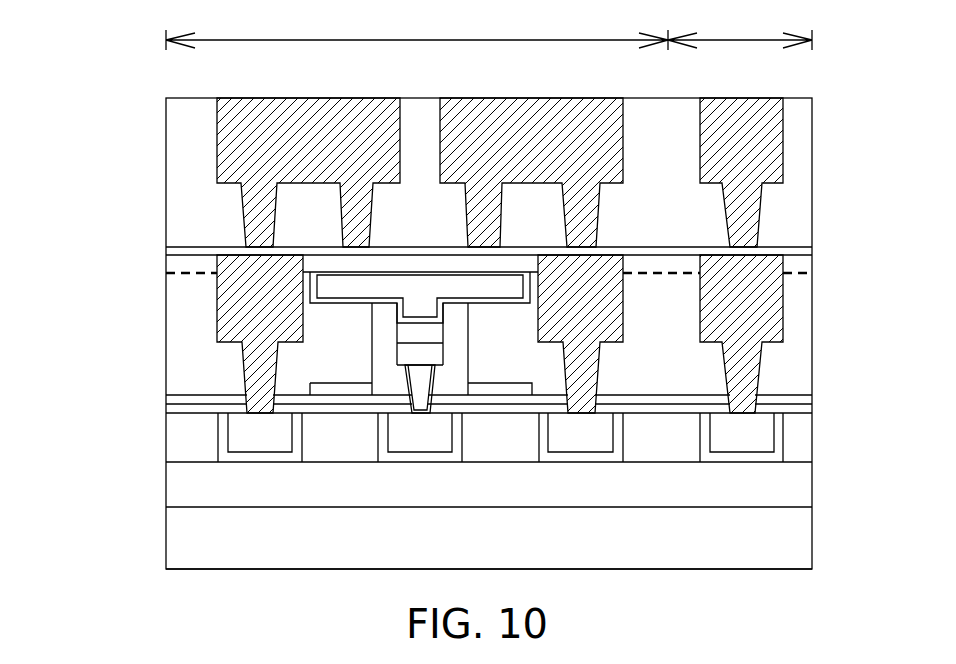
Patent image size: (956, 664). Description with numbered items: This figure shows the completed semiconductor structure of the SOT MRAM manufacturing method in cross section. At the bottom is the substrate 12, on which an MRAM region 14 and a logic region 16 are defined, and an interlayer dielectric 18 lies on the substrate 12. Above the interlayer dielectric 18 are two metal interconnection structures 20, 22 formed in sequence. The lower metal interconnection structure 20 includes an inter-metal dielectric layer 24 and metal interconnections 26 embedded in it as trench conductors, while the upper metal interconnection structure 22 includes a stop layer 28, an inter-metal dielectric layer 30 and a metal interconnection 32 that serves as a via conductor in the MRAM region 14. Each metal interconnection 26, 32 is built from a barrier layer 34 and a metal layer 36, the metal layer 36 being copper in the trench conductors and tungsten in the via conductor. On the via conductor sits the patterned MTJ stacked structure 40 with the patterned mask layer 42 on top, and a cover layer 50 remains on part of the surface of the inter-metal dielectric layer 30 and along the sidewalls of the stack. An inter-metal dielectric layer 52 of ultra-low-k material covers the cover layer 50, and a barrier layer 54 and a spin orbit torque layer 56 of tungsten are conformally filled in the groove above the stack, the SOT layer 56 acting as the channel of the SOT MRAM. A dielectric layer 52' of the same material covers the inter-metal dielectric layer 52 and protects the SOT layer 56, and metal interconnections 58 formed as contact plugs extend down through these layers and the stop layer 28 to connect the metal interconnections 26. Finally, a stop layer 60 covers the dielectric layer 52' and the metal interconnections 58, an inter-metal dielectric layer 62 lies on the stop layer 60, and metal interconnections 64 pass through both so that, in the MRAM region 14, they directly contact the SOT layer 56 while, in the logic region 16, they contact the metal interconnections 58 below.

The substrate 12 is at (650, 559).
The MRAM region 14 is at (417, 30).
The logic region 16 is at (740, 30).
The interlayer dielectric 18 is at (650, 500).
The metal interconnection structure 20 is at (325, 481).
The metal interconnection structure 22 is at (469, 376).
The inter-metal dielectric layer 24 is at (585, 440).
The metal interconnection 26 is at (125, 487).
The stop layer 28 is at (793, 412).
The inter-metal dielectric layer 30 is at (784, 398).
The metal interconnection 32 is at (125, 385).
The barrier layer 34 is at (407, 387).
The metal layer 36 is at (418, 374).
The patterned MTJ stacked structure 40 is at (433, 353).
The patterned mask layer 42 is at (407, 333).
The cover layer 50 is at (337, 395).
The inter-metal dielectric layer 52 is at (660, 355).
The dielectric layer 52' is at (489, 229).
The barrier layer 54 is at (448, 302).
The spin orbit torque (SOT) layer 56 is at (402, 288).
The metal interconnection 58 is at (243, 315).
The stop layer 60 is at (784, 252).
The inter-metal dielectric layer 62 is at (644, 145).
The metal interconnection 64 is at (290, 150).